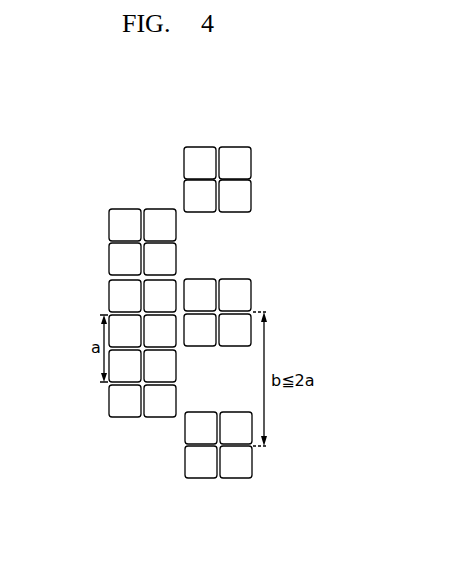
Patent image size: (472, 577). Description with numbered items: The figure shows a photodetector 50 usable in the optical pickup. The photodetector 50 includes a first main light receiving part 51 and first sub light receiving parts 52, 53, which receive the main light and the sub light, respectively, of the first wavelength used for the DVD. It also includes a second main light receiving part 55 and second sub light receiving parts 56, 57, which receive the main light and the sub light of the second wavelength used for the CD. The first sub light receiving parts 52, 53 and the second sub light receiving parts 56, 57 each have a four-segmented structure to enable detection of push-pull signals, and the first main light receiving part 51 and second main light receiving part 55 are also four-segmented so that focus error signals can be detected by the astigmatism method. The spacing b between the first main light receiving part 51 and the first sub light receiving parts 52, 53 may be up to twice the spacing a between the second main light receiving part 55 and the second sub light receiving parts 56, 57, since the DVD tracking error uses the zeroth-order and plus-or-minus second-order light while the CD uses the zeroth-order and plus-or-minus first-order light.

The photodetector 50 is at (150, 177).
The first main light receiving part 51 is at (270, 276).
The first sub light receiving part 52 is at (270, 412).
The first sub light receiving part 53 is at (270, 147).
The second main light receiving part 55 is at (85, 281).
The second sub light receiving part 56 is at (85, 352).
The second sub light receiving part 57 is at (85, 210).